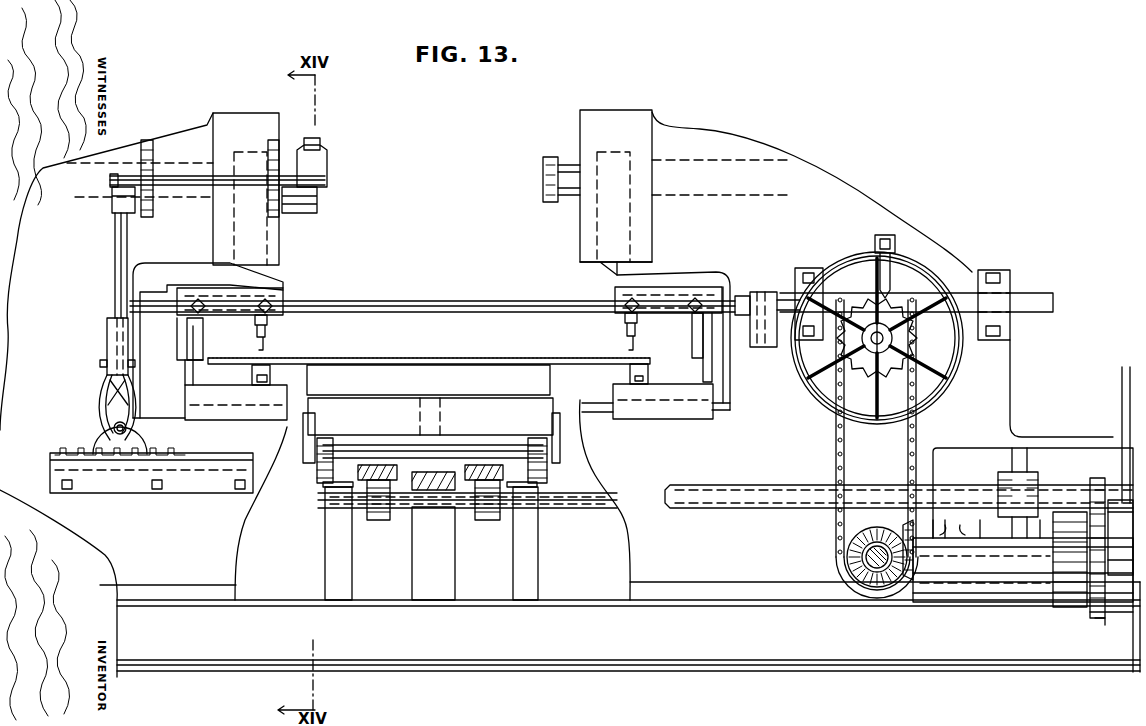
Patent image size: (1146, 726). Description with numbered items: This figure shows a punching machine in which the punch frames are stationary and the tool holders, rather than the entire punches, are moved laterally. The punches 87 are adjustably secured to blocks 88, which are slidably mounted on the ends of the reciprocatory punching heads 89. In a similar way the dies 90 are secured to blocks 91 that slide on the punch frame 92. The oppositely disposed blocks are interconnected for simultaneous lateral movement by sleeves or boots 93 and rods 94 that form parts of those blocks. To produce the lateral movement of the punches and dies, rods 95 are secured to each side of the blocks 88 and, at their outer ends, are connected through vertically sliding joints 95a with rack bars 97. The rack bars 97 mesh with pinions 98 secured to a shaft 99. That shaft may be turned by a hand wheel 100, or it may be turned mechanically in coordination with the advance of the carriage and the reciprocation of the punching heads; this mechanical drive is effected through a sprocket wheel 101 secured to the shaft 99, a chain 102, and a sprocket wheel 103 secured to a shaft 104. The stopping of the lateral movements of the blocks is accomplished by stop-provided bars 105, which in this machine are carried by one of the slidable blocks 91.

The punch 87 is at (278, 335).
The block 88 is at (285, 292).
The reciprocatory punching head 89 is at (282, 281).
The die 90 is at (272, 373).
The block 91 is at (278, 395).
The punch frame 92 is at (228, 527).
The sleeve or boot 93 is at (205, 345).
The rod 94 is at (183, 378).
The rod 95 is at (470, 302).
The vertically sliding joint 95a is at (763, 292).
The rack bar 97 is at (972, 290).
The pinion 98 is at (903, 340).
The shaft 99 is at (880, 338).
The hand wheel 100 is at (813, 378).
The sprocket wheel 101 is at (897, 370).
The chain 102 is at (918, 416).
The sprocket wheel 103 is at (838, 528).
The shaft 104 is at (873, 565).
The stop-provided bar 105 is at (74, 445).